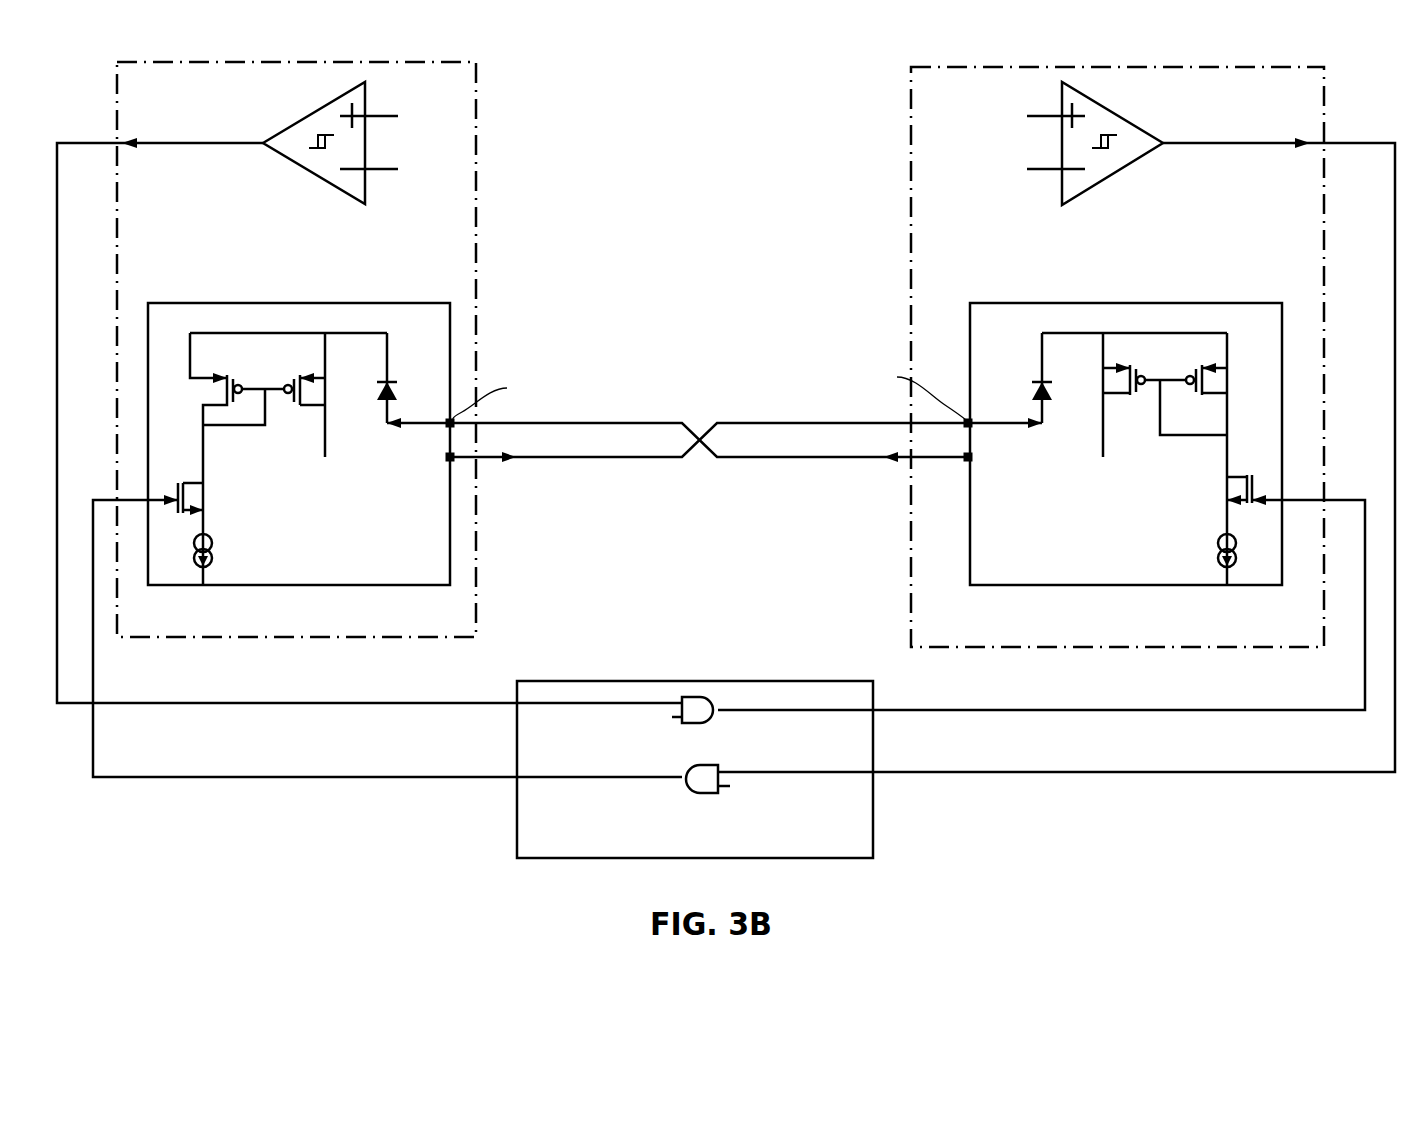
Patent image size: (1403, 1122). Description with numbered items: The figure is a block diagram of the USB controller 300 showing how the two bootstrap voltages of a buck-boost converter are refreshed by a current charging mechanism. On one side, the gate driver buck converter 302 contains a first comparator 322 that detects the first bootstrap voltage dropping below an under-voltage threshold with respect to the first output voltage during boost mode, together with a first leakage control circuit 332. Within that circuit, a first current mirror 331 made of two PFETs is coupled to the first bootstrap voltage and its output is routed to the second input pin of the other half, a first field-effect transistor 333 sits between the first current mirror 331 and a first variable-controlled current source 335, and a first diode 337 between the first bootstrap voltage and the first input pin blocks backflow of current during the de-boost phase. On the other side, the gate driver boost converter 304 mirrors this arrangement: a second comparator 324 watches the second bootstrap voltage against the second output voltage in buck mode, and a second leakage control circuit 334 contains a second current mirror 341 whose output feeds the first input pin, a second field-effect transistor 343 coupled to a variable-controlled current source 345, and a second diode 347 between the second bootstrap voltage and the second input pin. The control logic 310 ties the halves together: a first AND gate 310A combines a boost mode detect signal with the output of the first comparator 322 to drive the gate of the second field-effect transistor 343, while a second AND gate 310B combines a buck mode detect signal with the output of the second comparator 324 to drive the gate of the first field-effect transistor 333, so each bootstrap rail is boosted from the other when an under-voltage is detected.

The USB controller 300 is at (222, 836).
The gate driver buck converter 302 is at (437, 628).
The gate driver boost converter 304 is at (1258, 637).
The control logic 310 is at (772, 848).
The first AND gate 310A is at (700, 697).
The second AND gate 310B is at (687, 765).
The first comparator 322 is at (303, 118).
The second comparator 324 is at (1127, 118).
The first current mirror 331 is at (270, 440).
The first leakage control circuit 332 is at (418, 575).
The first field-effect transistor 333 is at (178, 488).
The second leakage control circuit 334 is at (1183, 573).
The first variable-controlled current source 335 is at (213, 545).
The first diode 337 is at (392, 392).
The second current mirror 341 is at (1140, 436).
The second field-effect transistor 343 is at (1252, 480).
The variable-controlled current source 345 is at (1217, 547).
The second diode 347 is at (1036, 392).